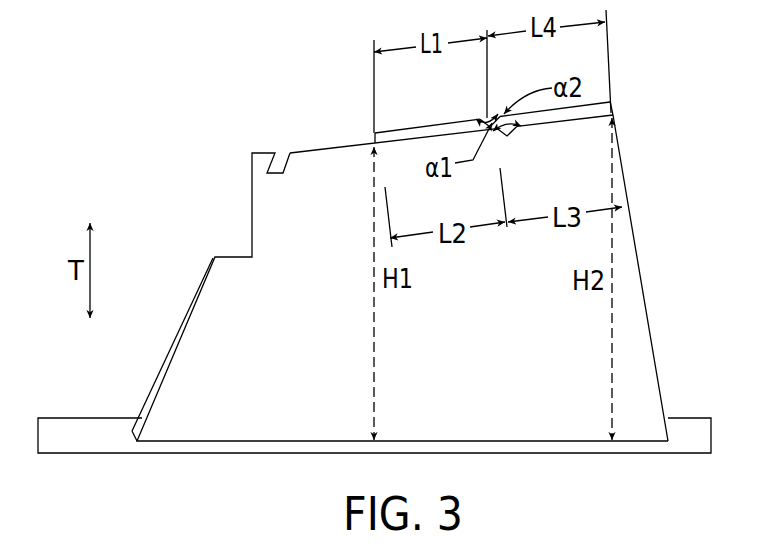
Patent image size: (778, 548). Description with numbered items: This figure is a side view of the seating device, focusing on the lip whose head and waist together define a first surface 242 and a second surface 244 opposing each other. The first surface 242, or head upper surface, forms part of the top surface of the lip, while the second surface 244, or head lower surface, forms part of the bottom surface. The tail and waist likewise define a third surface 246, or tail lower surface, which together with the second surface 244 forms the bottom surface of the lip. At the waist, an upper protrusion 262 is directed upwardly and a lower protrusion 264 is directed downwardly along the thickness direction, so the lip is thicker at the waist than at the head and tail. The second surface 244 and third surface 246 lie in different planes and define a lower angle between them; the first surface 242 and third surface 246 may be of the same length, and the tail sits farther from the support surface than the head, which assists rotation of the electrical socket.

The first surface 242 is at (420, 118).
The second surface 244 is at (398, 147).
The third surface 246 is at (589, 133).
The upper protrusion 262 is at (497, 105).
The lower protrusion 264 is at (512, 140).